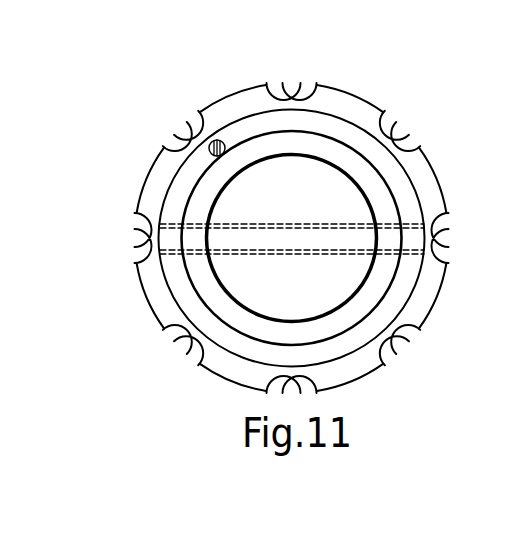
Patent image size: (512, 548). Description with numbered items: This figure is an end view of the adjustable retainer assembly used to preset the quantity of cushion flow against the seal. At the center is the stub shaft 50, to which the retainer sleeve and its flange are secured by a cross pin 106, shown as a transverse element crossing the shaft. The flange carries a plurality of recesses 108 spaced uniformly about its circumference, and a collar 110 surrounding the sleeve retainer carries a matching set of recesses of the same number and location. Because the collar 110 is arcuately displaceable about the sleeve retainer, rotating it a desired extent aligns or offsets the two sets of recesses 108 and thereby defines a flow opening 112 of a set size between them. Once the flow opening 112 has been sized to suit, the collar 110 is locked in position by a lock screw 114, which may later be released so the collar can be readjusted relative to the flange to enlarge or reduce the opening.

The stub shaft 50 is at (306, 210).
The cross pin 106 is at (273, 257).
The recesses 108 is at (321, 88).
The collar 110 is at (355, 372).
The flow opening 112 is at (300, 92).
The lock screw 114 is at (200, 138).